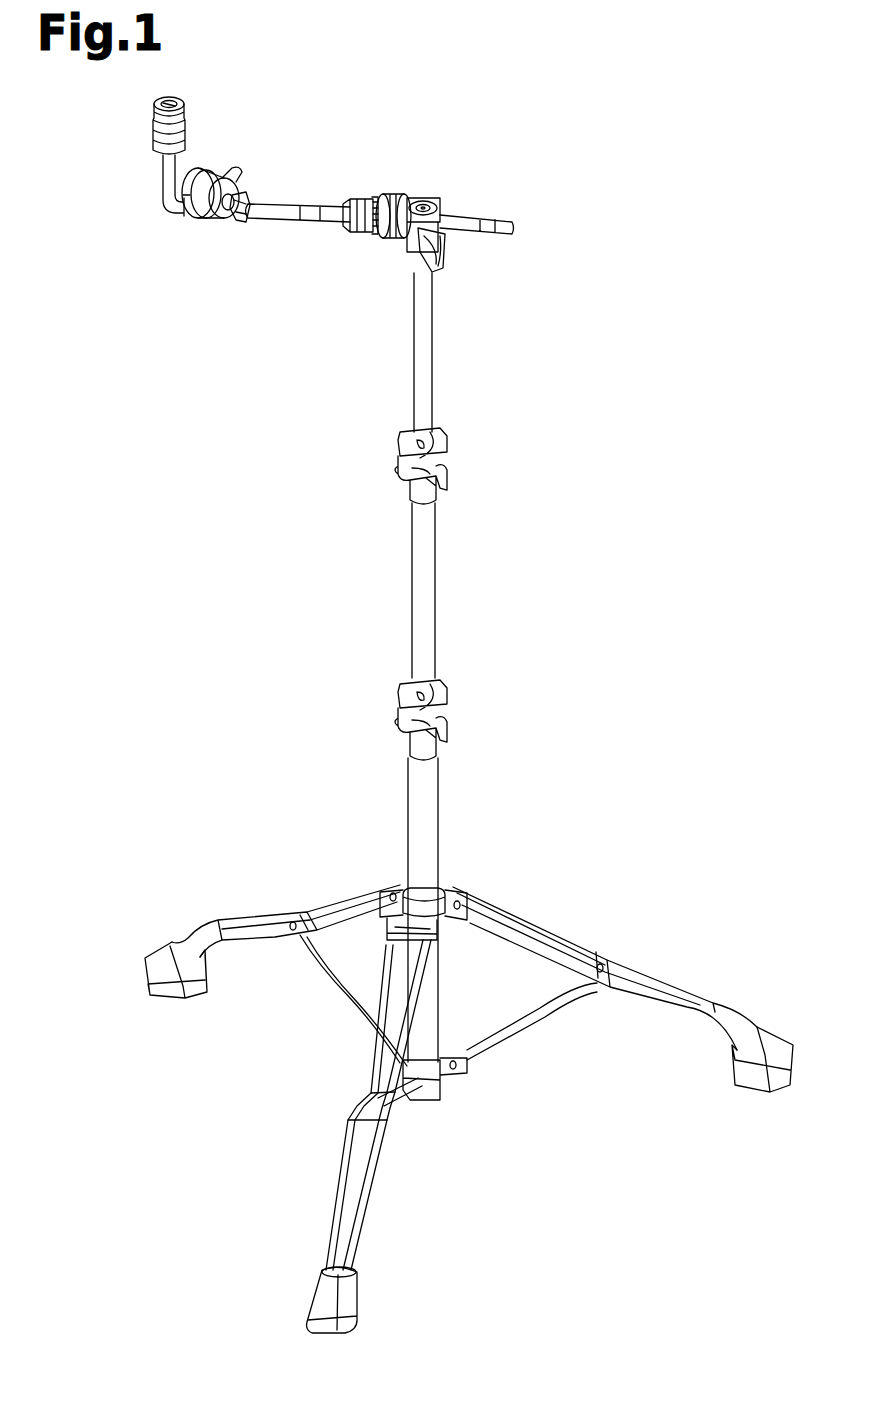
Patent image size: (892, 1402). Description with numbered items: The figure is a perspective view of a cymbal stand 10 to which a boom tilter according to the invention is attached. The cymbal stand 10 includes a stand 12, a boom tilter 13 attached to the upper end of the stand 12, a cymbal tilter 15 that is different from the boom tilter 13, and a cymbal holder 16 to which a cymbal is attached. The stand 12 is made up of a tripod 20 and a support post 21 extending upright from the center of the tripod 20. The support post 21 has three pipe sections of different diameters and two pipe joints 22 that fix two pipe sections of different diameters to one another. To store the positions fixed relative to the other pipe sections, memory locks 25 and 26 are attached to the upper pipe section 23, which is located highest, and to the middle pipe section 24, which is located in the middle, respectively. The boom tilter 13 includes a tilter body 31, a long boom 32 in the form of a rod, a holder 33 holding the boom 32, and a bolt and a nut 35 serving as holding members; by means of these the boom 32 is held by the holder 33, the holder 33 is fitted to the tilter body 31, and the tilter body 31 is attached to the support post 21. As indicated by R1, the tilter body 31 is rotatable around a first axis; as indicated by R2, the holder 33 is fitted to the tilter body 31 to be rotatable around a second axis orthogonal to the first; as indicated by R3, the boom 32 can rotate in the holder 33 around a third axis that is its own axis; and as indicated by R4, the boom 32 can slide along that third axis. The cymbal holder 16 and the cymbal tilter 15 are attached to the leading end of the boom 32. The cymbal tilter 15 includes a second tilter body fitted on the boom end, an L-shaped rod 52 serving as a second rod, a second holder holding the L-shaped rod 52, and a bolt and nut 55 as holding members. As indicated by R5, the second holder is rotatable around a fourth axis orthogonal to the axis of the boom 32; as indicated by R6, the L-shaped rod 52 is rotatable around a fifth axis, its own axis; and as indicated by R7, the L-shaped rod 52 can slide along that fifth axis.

The cymbal stand 10 is at (715, 155).
The stand 12 is at (500, 652).
The boom tilter 13 is at (430, 184).
The cymbal tilter 15 is at (211, 259).
The cymbal holder 16 is at (204, 110).
The tripod 20 is at (545, 935).
The support post 21 is at (449, 573).
The pipe joints 22 is at (445, 470).
The upper pipe section 23 is at (410, 384).
The middle pipe section 24 is at (412, 572).
The memory lock 25 is at (440, 440).
The memory lock 26 is at (445, 692).
The tilter body 31 is at (387, 250).
The boom 32 is at (513, 230).
The holder 33 is at (372, 195).
The nut 35 is at (440, 260).
The L-shaped rod 52 is at (165, 212).
The nut 55 is at (226, 232).
The rotation around first axis R1 is at (438, 314).
The rotation around second axis R2 is at (362, 258).
The rotation around third axis R3 is at (340, 220).
The sliding along third axis R4 is at (492, 210).
The rotation around fourth axis R5 is at (232, 165).
The rotation around fifth axis R6 is at (188, 224).
The sliding along fifth axis R7 is at (265, 163).